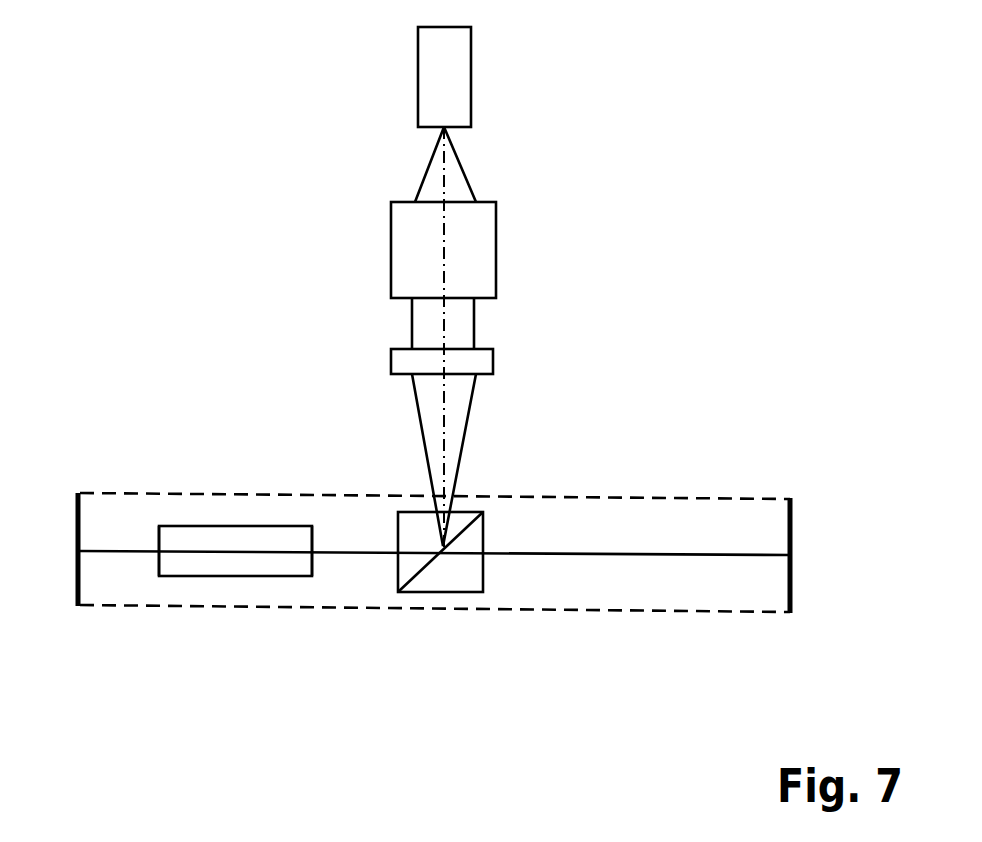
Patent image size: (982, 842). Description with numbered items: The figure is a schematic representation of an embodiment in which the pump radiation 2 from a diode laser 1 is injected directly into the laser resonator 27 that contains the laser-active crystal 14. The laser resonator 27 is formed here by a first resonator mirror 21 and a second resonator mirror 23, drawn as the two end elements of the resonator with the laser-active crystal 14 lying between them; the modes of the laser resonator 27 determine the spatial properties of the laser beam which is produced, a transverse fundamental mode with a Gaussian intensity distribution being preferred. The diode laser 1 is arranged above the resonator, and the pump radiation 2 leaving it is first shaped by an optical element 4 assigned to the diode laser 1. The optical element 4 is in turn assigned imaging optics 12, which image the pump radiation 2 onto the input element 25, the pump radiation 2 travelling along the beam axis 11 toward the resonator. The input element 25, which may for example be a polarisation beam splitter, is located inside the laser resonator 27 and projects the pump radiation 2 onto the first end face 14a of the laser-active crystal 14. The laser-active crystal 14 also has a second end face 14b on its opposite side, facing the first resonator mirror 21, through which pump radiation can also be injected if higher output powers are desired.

The diode laser 1 is at (425, 53).
The pump radiation 2 is at (458, 156).
The optical element 4 is at (391, 252).
The imaging optics 12 is at (408, 355).
The beam axis 11 is at (445, 410).
The laser-active crystal 14 is at (227, 534).
The first end face 14a is at (312, 558).
The second end face 14b is at (158, 557).
The first resonator mirror 21 is at (77, 528).
The second resonator mirror 23 is at (790, 538).
The input element 25 is at (430, 585).
The laser resonator 27 is at (647, 610).